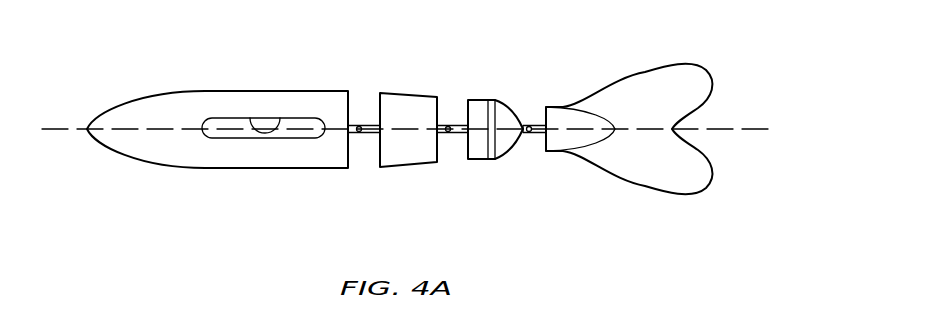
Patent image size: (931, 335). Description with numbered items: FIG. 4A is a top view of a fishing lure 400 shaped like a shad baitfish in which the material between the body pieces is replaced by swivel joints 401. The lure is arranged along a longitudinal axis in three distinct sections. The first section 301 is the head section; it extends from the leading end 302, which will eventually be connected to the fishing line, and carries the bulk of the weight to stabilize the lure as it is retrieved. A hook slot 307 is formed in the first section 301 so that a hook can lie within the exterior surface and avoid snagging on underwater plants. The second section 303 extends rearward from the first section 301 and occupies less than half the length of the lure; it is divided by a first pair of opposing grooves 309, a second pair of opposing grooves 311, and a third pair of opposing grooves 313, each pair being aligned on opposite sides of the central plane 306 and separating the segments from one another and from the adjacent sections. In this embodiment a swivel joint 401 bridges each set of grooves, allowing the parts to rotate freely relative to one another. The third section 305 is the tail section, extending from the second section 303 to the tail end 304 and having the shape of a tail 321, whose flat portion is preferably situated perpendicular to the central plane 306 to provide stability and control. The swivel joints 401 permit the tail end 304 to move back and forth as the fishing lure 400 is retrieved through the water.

The fishing lure 400 is at (408, 131).
The first section 301 is at (195, 149).
The leading end 302 is at (87, 127).
The hook slot 307 is at (250, 118).
The swivel joint 401 is at (361, 122).
The second section 303 is at (452, 172).
The first pair of opposing grooves 309 is at (365, 160).
The second pair of opposing grooves 311 is at (454, 160).
The third pair of opposing grooves 313 is at (537, 168).
The third section 305 is at (649, 140).
The tail 321 is at (650, 70).
The tail end 304 is at (712, 134).
The central plane 306 is at (729, 124).